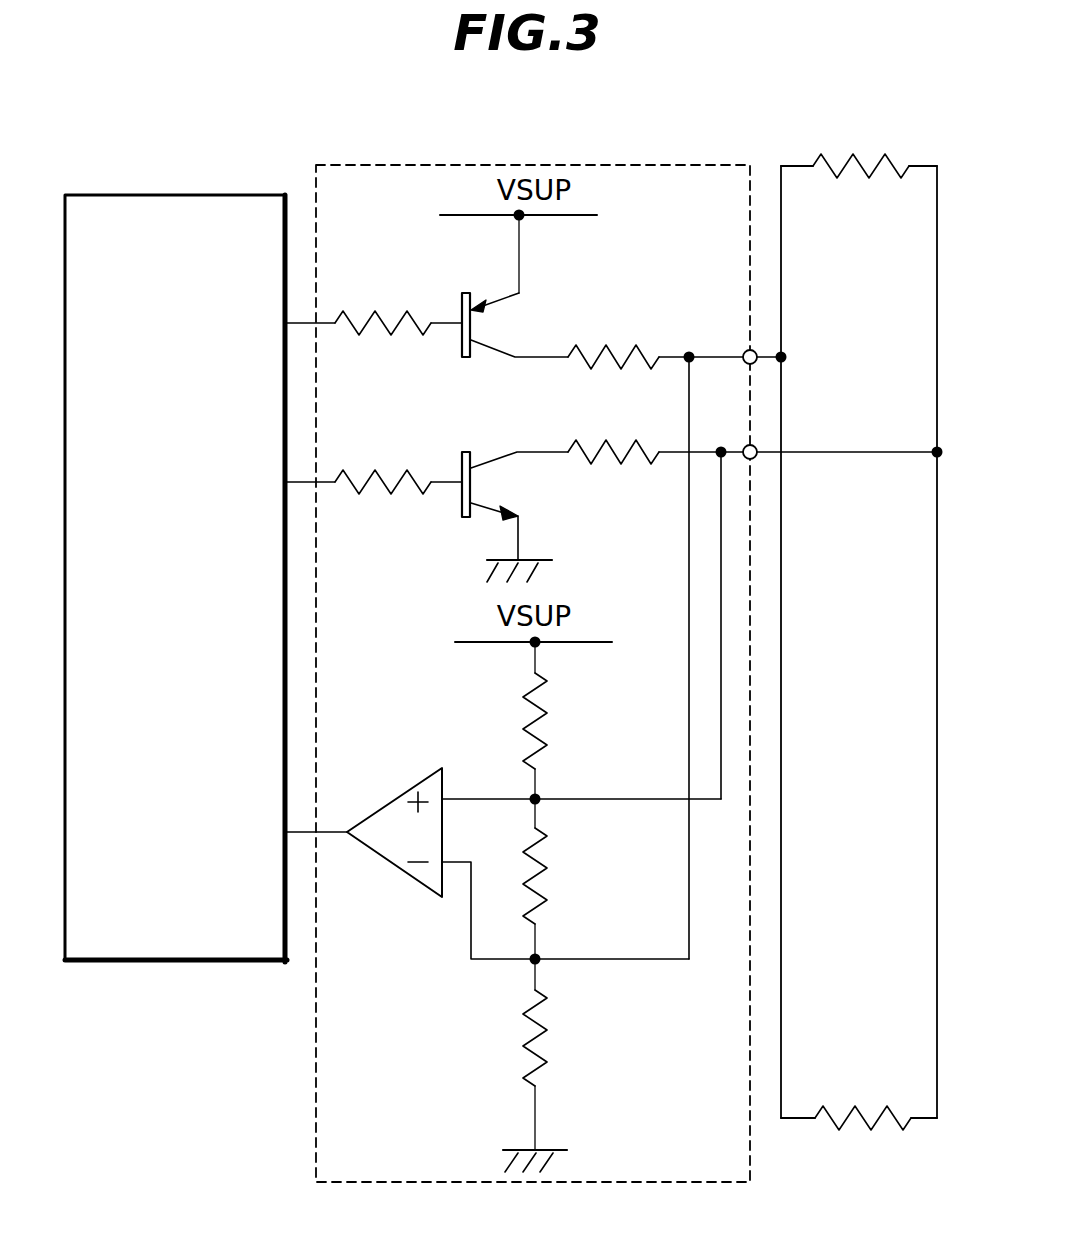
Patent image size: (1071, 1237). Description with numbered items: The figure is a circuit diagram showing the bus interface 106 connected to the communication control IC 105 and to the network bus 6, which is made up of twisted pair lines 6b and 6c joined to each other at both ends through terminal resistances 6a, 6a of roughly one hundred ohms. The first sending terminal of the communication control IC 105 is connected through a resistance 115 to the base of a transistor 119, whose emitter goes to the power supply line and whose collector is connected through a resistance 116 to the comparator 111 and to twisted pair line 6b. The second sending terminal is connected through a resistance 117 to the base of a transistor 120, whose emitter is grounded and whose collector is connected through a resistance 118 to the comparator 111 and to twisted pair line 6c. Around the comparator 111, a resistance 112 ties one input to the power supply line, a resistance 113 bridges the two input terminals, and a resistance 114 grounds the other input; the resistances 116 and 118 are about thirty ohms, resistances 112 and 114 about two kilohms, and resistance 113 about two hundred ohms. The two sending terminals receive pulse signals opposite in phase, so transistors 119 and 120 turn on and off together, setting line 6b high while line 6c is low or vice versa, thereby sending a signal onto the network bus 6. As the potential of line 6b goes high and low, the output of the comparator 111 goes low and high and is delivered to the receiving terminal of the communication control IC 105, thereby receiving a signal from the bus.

The communication control IC 105 is at (222, 195).
The bus interface 106 is at (530, 165).
The comparator 111 is at (366, 815).
The resistance 112 is at (546, 745).
The resistance 113 is at (546, 908).
The resistance 114 is at (546, 1062).
The resistance 115 is at (396, 318).
The resistance 116 is at (580, 345).
The resistance 117 is at (392, 480).
The resistance 118 is at (577, 452).
The transistor 119 is at (460, 352).
The transistor 120 is at (464, 505).
The network bus 6 is at (822, 603).
The terminal resistance 6a is at (885, 155).
The twisted pair line 6b is at (781, 302).
The twisted pair line 6c is at (935, 413).